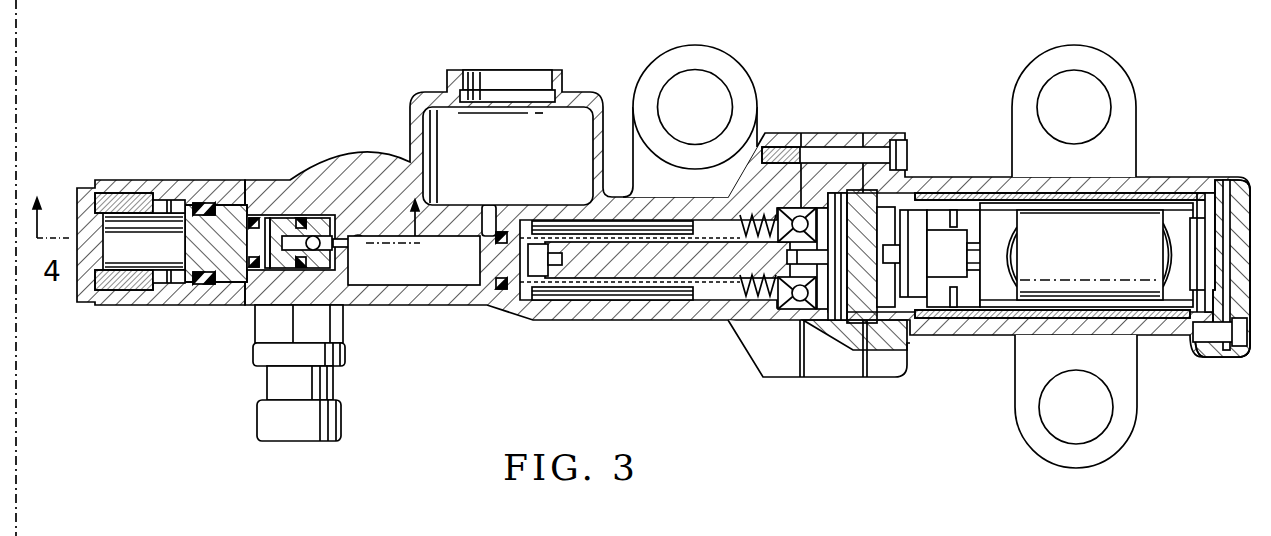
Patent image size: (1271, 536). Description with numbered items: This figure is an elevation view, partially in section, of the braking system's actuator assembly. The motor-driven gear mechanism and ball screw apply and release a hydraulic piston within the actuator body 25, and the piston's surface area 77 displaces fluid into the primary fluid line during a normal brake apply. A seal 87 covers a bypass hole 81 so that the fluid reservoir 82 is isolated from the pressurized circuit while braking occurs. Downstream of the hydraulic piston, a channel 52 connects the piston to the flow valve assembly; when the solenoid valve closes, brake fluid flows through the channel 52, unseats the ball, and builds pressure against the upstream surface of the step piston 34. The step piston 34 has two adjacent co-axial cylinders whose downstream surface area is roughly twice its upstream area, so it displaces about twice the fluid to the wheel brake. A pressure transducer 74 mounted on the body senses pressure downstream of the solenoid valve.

The actuator body 25 is at (379, 192).
The step piston 34 is at (230, 218).
The channel 52 is at (339, 226).
The pressure transducer 74 is at (250, 351).
The piston surface area 77 is at (466, 271).
The bypass hole 81 is at (483, 227).
The fluid reservoir 82 is at (568, 128).
The seal 87 is at (501, 289).